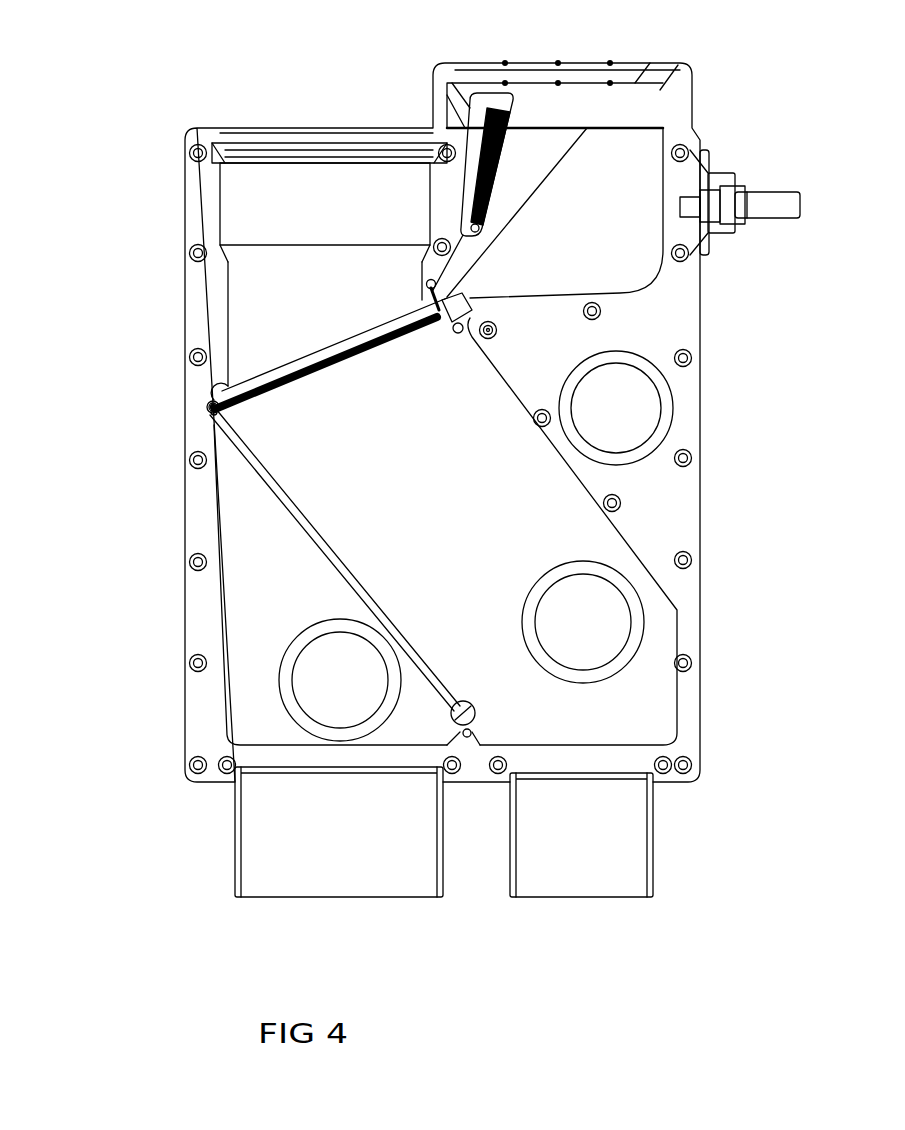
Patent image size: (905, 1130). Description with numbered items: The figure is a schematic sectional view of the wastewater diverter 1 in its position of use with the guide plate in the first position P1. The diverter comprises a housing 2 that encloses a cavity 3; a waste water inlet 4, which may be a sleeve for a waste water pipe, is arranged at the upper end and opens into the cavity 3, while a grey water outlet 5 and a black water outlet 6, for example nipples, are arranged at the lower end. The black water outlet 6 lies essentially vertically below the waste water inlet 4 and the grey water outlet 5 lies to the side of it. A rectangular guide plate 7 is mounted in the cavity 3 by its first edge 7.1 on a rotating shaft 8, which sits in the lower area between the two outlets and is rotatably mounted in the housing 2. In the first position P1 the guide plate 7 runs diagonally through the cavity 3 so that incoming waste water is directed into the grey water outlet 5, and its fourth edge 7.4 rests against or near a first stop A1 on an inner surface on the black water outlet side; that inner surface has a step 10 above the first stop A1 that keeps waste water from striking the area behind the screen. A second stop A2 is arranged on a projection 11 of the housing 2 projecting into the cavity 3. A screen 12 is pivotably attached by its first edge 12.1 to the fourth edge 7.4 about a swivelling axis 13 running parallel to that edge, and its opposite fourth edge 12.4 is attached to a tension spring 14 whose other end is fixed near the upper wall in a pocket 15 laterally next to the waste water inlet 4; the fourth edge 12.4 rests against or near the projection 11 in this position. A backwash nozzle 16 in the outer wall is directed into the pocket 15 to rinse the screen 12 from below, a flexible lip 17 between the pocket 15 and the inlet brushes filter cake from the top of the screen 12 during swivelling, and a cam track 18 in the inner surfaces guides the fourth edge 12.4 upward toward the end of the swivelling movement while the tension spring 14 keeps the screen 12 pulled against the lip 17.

The wastewater diverter 1 is at (172, 88).
The housing 2 is at (203, 280).
The cavity 3 is at (330, 492).
The waste water inlet 4 is at (305, 175).
The grey water outlet 5 is at (625, 852).
The black water outlet 6 is at (258, 842).
The guide plate 7 is at (330, 568).
The first edge 7.1 is at (467, 702).
The fourth edge 7.4 is at (216, 423).
The rotating shaft 8 is at (470, 737).
The step 10 is at (220, 390).
The projection 11 is at (497, 325).
The screen 12 is at (335, 337).
The first edge 12.1 is at (207, 398).
The fourth edge 12.4 is at (483, 298).
The swivelling axis 13 is at (213, 417).
The tension spring 14 is at (478, 107).
The pocket 15 is at (638, 162).
The backwash nozzle 16 is at (690, 186).
The flexible lip 17 is at (403, 307).
The cam track 18 is at (547, 187).
The first stop A1 is at (198, 404).
The second stop A2 is at (477, 333).
The first position P1 is at (252, 472).